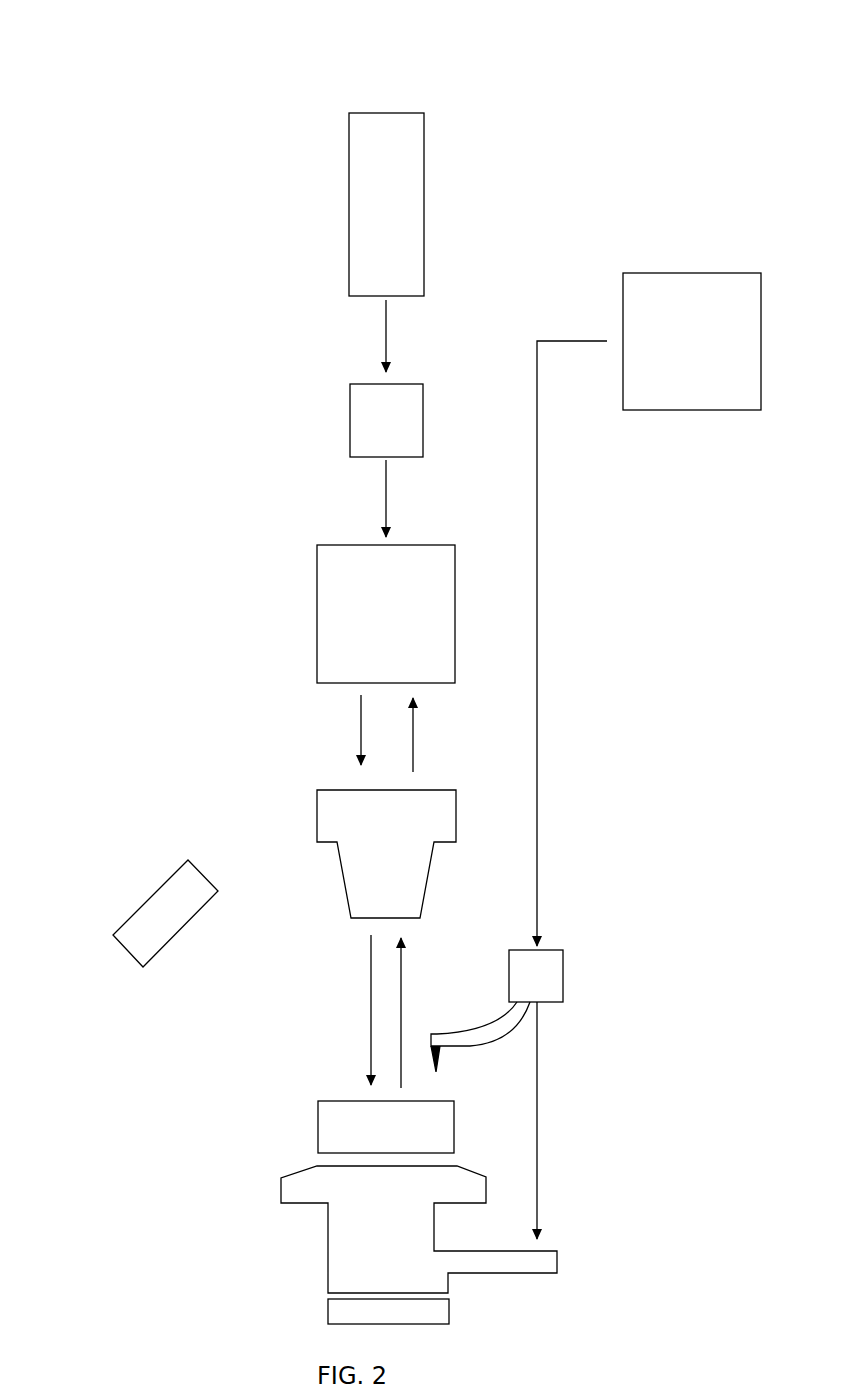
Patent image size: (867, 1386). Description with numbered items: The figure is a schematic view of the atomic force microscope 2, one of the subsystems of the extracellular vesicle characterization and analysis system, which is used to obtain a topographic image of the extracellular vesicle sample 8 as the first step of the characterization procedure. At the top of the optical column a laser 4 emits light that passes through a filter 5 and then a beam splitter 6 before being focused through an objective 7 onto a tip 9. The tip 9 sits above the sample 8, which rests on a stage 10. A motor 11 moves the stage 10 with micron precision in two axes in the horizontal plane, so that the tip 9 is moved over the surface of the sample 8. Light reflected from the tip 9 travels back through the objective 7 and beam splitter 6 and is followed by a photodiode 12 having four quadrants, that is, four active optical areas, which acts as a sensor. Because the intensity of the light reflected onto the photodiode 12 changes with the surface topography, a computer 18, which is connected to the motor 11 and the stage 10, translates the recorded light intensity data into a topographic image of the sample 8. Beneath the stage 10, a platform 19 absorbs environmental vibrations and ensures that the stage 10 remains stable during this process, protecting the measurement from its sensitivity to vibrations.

The atomic force microscope 2 is at (172, 112).
The laser 4 is at (360, 275).
The filter 5 is at (360, 435).
The beam splitter 6 is at (331, 653).
The objective 7 is at (340, 838).
The sample 8 is at (333, 1132).
The tip 9 is at (437, 1068).
The stage 10 is at (347, 1243).
The motor 11 is at (540, 975).
The photodiode 12 is at (175, 908).
The computer 18 is at (648, 303).
The platform 19 is at (339, 1311).